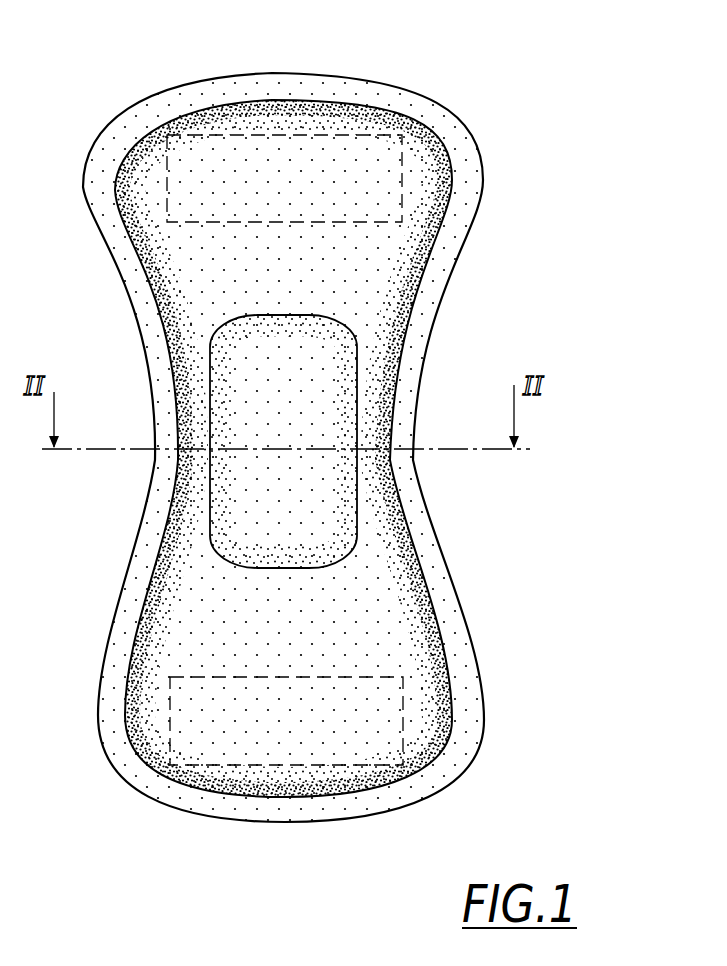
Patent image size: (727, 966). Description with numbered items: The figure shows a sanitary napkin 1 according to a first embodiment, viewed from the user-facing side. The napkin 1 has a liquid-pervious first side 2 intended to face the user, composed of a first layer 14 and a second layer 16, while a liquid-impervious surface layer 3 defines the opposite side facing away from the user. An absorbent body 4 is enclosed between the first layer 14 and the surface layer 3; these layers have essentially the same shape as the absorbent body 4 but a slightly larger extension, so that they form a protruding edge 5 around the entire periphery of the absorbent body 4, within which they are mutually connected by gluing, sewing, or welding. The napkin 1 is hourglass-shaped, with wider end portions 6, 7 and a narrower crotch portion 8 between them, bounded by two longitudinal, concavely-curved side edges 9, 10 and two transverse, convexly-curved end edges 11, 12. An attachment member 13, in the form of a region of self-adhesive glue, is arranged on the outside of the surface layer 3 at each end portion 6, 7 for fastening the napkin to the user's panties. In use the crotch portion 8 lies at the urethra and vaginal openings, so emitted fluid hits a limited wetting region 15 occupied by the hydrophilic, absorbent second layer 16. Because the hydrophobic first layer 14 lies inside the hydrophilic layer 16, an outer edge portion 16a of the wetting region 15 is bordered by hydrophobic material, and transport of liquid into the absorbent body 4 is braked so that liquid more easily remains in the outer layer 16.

The sanitary napkin 1 is at (508, 68).
The liquid-pervious first side 2 is at (386, 256).
The liquid-impervious surface layer 3 is at (415, 553).
The absorbent body 4 is at (205, 642).
The protruding edge 5 is at (450, 618).
The end portion 6 is at (145, 737).
The end portion 7 is at (150, 184).
The crotch portion 8 is at (202, 475).
The longitudinal side edge 9 is at (118, 307).
The longitudinal side edge 10 is at (432, 337).
The end edge 11 is at (312, 72).
The end edge 12 is at (282, 824).
The attachment member 13 is at (383, 135).
The first layer 14 is at (420, 697).
The wetting region 15 is at (315, 517).
The second layer 16 is at (243, 363).
The outer edge portion 16a is at (357, 395).